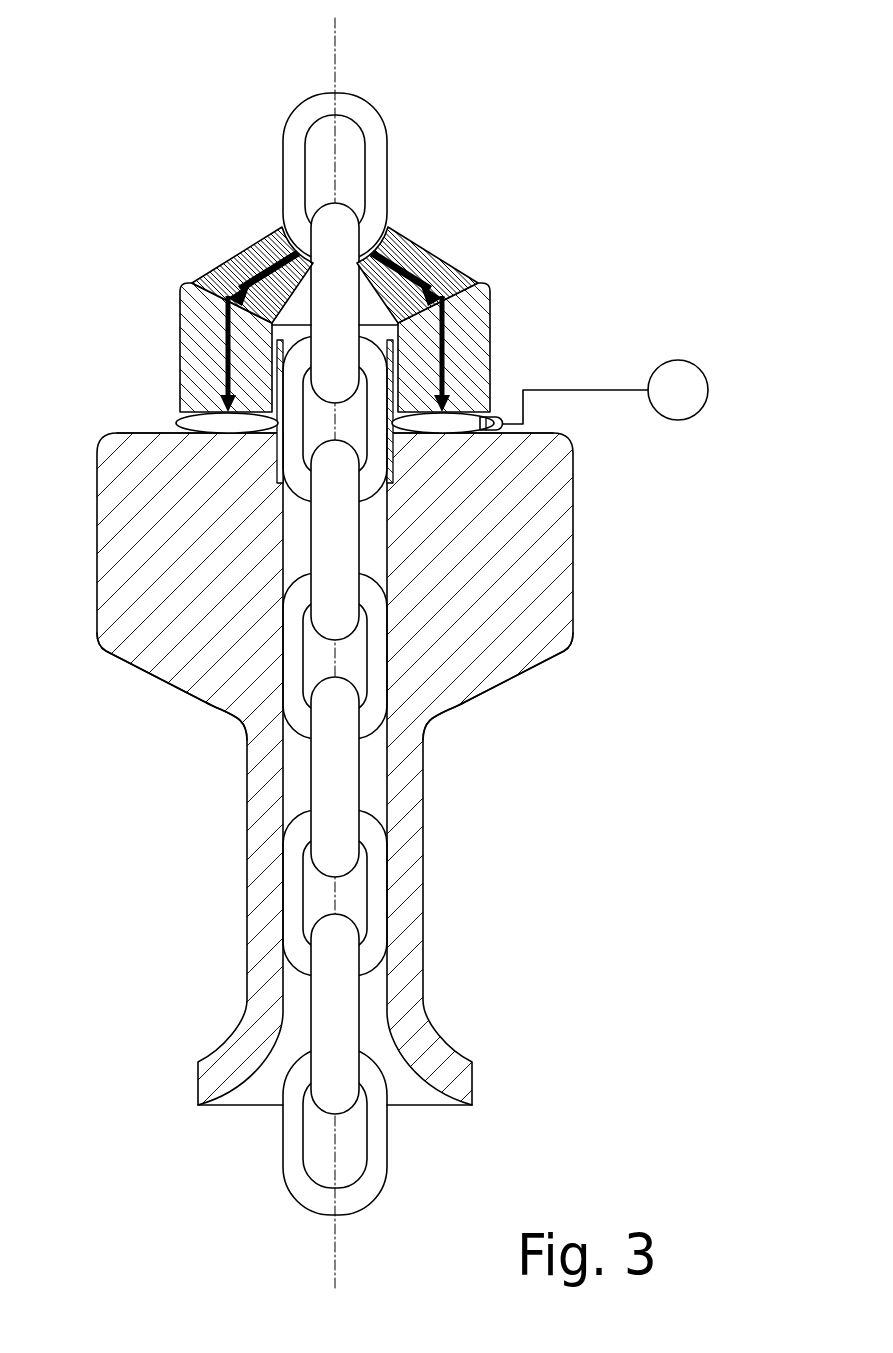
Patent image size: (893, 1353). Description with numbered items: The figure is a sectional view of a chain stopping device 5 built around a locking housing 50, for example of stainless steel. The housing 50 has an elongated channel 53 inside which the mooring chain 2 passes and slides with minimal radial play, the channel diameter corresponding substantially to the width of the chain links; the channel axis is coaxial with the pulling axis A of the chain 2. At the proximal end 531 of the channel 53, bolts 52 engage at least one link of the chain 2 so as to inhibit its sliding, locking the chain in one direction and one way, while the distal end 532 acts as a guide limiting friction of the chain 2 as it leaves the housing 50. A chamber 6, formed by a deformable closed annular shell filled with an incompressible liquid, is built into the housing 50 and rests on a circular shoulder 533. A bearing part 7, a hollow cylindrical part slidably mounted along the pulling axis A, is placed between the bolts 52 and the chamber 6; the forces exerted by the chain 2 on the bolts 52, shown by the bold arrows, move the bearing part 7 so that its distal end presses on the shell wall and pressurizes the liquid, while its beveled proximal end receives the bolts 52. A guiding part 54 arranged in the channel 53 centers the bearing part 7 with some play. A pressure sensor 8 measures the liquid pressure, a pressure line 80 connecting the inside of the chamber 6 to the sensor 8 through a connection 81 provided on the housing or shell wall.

The pulling axis A is at (335, 48).
The mooring chain 2 is at (287, 175).
The chain stopping device 5 is at (595, 512).
The chamber (deformable closed shell) 6 is at (183, 418).
The bearing part 7 is at (182, 320).
The pressure sensor 8 is at (698, 368).
The locking housing 50 is at (507, 688).
The bolts 52 is at (258, 247).
The channel 53 is at (372, 536).
The guiding part 54 is at (278, 452).
The pressure line 80 is at (572, 390).
The connection (pressure measurement point) 81 is at (497, 413).
The proximal end of the channel 531 is at (232, 285).
The distal end of the channel 532 is at (250, 1104).
The circular shoulder 533 is at (143, 433).